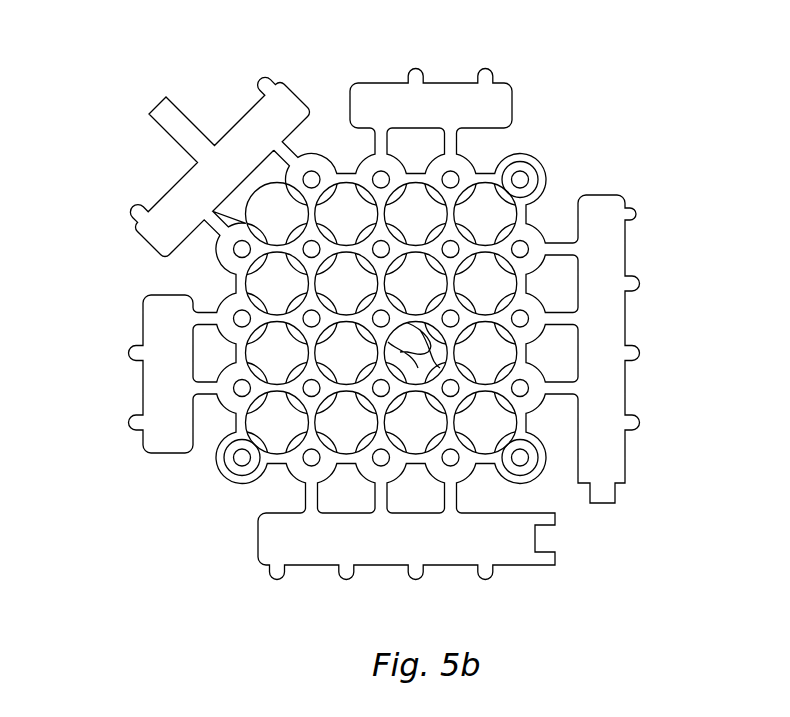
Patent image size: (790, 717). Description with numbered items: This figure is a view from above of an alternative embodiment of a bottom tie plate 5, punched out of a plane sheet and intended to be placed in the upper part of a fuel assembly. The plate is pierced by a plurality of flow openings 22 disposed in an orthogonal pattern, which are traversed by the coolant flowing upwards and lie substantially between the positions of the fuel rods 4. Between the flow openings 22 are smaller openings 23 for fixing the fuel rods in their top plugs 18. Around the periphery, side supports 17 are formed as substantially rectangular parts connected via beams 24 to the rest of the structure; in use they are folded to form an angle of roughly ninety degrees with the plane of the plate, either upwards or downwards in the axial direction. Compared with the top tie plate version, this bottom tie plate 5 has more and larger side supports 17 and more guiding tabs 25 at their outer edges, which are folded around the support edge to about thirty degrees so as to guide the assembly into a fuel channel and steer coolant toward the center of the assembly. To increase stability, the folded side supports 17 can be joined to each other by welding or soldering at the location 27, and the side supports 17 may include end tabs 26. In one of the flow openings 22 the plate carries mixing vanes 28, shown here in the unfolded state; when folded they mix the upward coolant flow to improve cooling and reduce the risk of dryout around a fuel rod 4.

The fuel rod 4 is at (546, 445).
The bottom tie plate 5 is at (528, 146).
The side support 17 is at (492, 93).
The top plug 18 is at (533, 166).
The flow opening 22 is at (490, 355).
The smaller opening 23 is at (521, 180).
The beam 24 is at (430, 137).
The guiding tab 25 is at (256, 80).
The end tab 26 is at (605, 503).
The joint 27 is at (167, 296).
The mixing vane 28 is at (412, 352).